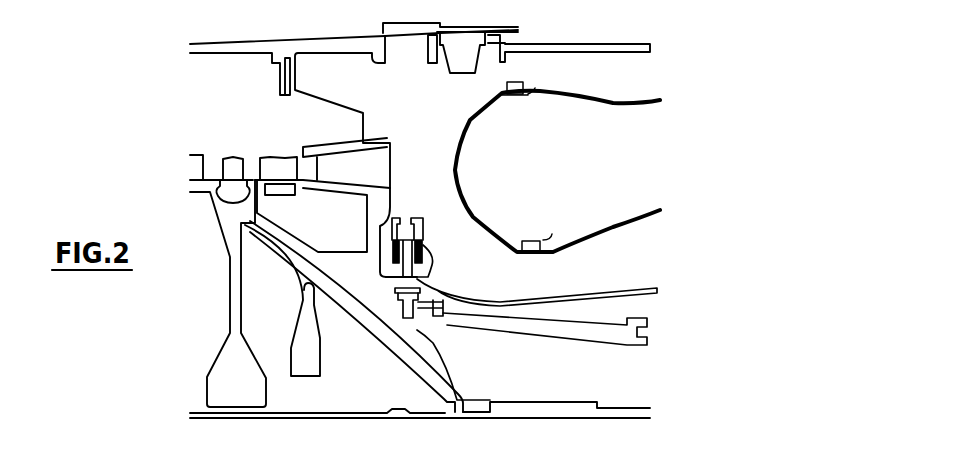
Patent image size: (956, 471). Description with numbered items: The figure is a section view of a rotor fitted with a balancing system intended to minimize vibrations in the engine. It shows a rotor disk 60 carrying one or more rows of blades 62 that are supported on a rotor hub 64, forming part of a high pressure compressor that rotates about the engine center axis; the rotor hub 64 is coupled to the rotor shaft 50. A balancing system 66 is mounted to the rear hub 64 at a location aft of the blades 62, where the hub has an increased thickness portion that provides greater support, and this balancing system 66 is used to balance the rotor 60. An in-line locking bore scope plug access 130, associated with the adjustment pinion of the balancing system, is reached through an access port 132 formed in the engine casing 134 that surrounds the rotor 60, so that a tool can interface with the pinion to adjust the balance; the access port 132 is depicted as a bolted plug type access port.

The rotor shaft 50 is at (453, 418).
The rotor disk 60 is at (215, 301).
The blades 62 is at (229, 157).
The rotor hub 64 is at (378, 316).
The balancing system 66 is at (426, 315).
The in-line locking bore scope plug access 130 is at (430, 236).
The access port 132 is at (436, 66).
The engine casing 134 is at (549, 47).